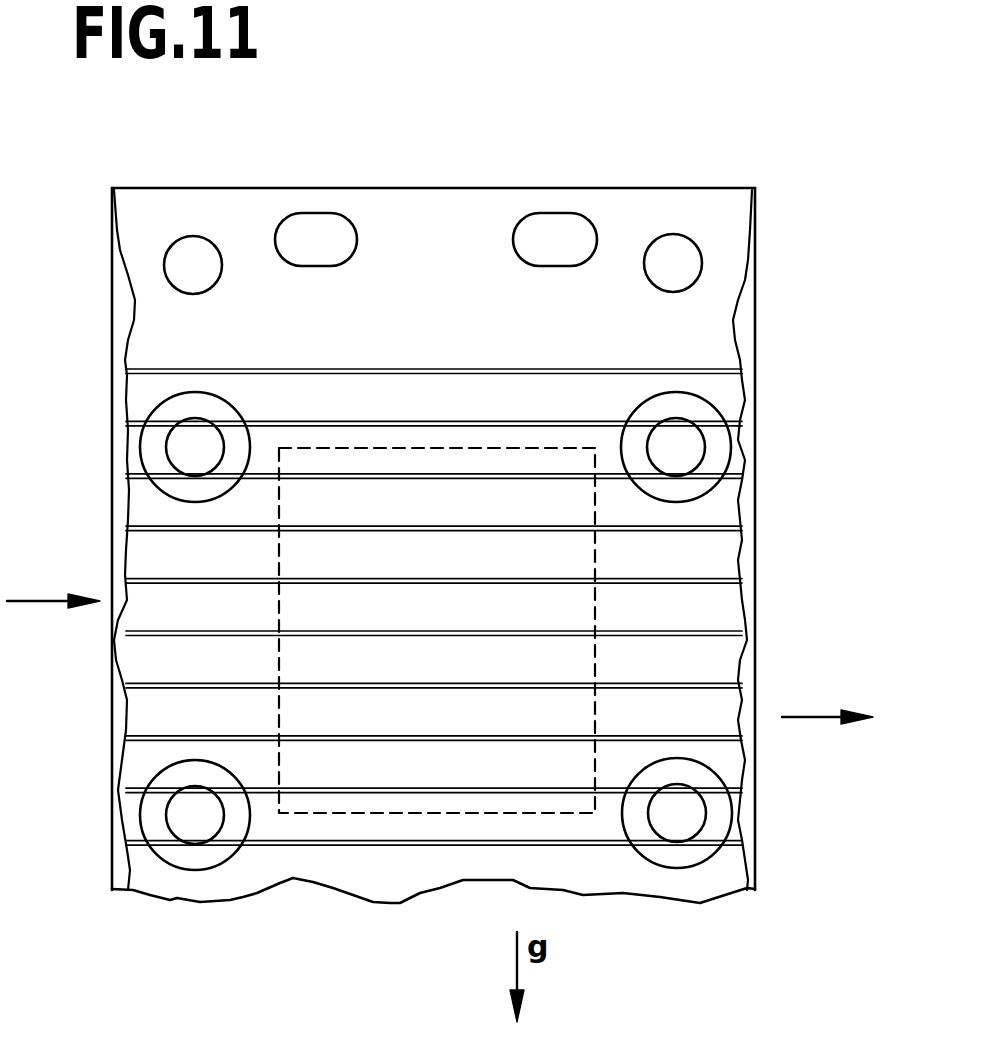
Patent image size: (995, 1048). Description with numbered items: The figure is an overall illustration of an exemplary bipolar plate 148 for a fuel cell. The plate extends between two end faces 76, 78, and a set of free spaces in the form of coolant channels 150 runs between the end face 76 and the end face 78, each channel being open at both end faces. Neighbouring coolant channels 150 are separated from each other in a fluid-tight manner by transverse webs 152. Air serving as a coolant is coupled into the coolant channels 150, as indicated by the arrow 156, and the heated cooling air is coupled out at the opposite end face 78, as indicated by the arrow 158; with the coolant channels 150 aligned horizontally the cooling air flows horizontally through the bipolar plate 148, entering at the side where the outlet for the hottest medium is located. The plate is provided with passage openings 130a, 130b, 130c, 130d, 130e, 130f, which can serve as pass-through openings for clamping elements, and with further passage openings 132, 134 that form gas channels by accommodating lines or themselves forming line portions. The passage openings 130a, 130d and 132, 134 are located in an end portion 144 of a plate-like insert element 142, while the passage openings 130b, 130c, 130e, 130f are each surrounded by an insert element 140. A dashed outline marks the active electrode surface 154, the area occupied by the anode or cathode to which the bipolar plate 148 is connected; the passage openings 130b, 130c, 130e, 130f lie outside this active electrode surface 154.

The end face 76 is at (111, 497).
The end face 78 is at (756, 637).
The passage opening 130a is at (688, 275).
The passage opening 130b is at (688, 452).
The passage opening 130c is at (685, 820).
The passage opening 130d is at (182, 265).
The passage opening 130e is at (181, 444).
The passage opening 130f is at (187, 817).
The passage opening 132 is at (310, 228).
The passage opening 134 is at (557, 228).
The insert element 140 is at (694, 487).
The plate-like insert element 142 is at (452, 215).
The end portion 144 is at (757, 222).
The bipolar plate 148 is at (756, 568).
The coolant channel 150 is at (133, 664).
The transverse web 152 is at (153, 735).
The active electrode surface 154 is at (390, 814).
The arrow 156 is at (37, 602).
The arrow 158 is at (807, 718).